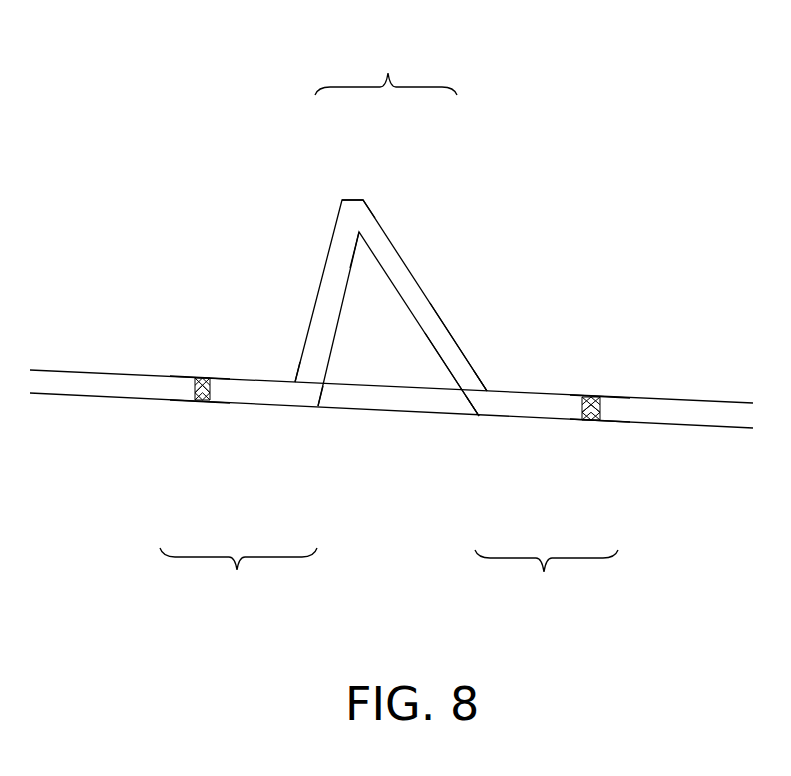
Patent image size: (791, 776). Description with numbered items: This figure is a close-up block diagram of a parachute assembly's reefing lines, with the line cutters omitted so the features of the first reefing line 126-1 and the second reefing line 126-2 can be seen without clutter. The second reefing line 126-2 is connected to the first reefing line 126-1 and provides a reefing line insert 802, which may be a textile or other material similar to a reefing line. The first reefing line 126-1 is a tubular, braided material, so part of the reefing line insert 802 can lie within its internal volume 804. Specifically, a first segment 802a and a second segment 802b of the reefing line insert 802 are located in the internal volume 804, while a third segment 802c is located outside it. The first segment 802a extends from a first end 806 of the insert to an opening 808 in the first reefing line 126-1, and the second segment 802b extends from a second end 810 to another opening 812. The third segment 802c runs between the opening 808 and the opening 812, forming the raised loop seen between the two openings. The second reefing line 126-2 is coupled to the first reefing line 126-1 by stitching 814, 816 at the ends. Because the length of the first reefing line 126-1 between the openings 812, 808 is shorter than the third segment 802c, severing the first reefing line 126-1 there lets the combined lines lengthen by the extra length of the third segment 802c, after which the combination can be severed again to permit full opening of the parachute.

The reefing line insert 802 is at (445, 222).
The first segment 802a is at (546, 578).
The second segment 802b is at (238, 575).
The third segment 802c is at (386, 66).
The internal volume 804 is at (700, 426).
The first end 806 is at (607, 450).
The opening 808 is at (485, 402).
The second end 810 is at (194, 433).
The opening 812 is at (295, 390).
The stitching 814 is at (595, 402).
The stitching 816 is at (202, 380).
The first reefing line 126-1 is at (432, 402).
The second reefing line 126-2 is at (355, 212).